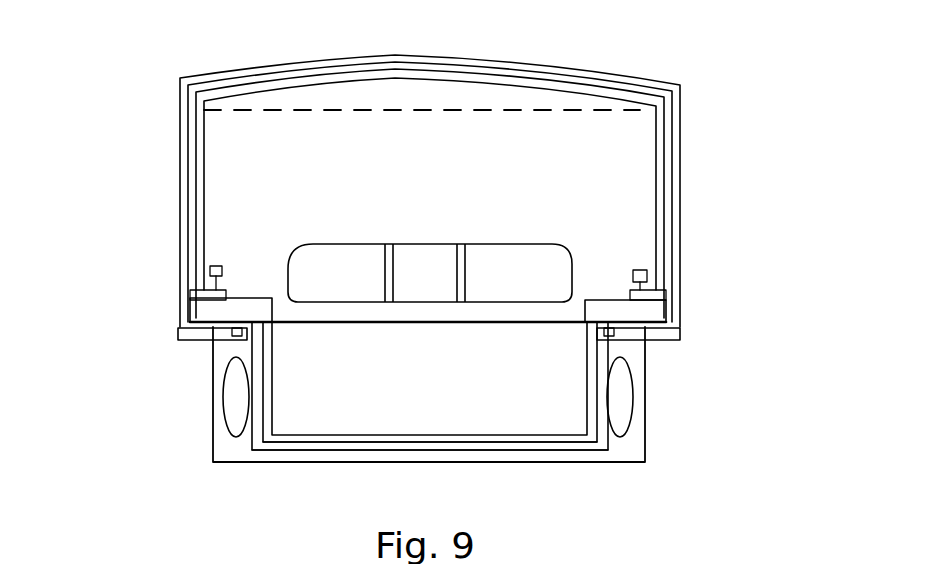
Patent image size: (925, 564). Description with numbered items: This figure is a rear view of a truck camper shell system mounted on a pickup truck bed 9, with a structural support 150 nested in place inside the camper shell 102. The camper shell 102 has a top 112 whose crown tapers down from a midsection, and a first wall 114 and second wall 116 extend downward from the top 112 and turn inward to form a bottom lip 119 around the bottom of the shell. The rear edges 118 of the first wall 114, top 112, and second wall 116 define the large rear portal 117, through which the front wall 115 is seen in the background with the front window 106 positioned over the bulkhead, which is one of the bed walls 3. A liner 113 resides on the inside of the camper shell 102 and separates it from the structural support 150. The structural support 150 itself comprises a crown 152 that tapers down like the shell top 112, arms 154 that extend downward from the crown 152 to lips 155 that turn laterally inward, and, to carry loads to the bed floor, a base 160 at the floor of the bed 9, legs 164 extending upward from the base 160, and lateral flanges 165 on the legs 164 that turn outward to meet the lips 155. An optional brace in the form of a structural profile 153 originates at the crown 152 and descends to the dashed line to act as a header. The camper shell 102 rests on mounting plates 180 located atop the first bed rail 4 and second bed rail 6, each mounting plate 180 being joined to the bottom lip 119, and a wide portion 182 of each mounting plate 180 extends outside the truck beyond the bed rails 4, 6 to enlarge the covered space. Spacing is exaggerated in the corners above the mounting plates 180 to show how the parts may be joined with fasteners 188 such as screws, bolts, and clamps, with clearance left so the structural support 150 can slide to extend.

The truck camper shell 102 is at (273, 67).
The rear edges 118 is at (195, 82).
The first wall 114 is at (180, 180).
The second wall 116 is at (680, 158).
The portal 117 is at (635, 212).
The arms 154 is at (658, 140).
The structural support 150 is at (330, 90).
The crown 152 is at (403, 84).
The top 112 is at (423, 57).
The liner 113 is at (495, 68).
The front wall 115 is at (498, 167).
The structural profile 153 is at (583, 108).
The front window 106 is at (292, 250).
The fasteners 188 is at (217, 270).
The lateral flanges 165 is at (195, 292).
The lips 155 is at (645, 297).
The mounting plate 180 is at (208, 335).
The bottom lip 119 is at (178, 333).
The wide portion 182 is at (675, 338).
The bed walls 3 is at (643, 432).
The first bed rail 4 is at (237, 347).
The second bed rail 6 is at (622, 352).
The legs 164 is at (265, 397).
The base 160 is at (343, 435).
The bed 9 is at (503, 453).